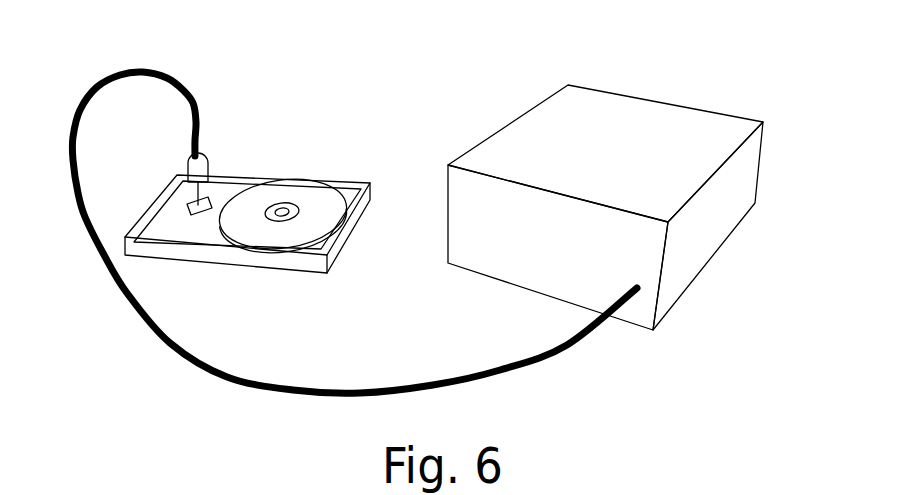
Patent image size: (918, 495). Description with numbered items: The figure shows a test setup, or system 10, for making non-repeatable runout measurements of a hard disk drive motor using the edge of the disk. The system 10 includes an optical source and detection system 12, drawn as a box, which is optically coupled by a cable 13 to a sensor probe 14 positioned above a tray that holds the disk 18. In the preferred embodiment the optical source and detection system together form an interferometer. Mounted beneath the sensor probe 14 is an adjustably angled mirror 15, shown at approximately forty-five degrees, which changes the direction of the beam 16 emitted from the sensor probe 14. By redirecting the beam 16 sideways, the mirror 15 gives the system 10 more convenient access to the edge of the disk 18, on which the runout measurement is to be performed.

The system 10 is at (417, 233).
The optical source and detection system 12 is at (631, 177).
The cable 13 is at (388, 385).
The sensor probe 14 is at (207, 158).
The adjustably angled mirror 15 is at (217, 210).
The beam 16 is at (220, 212).
The disk 18 is at (323, 215).